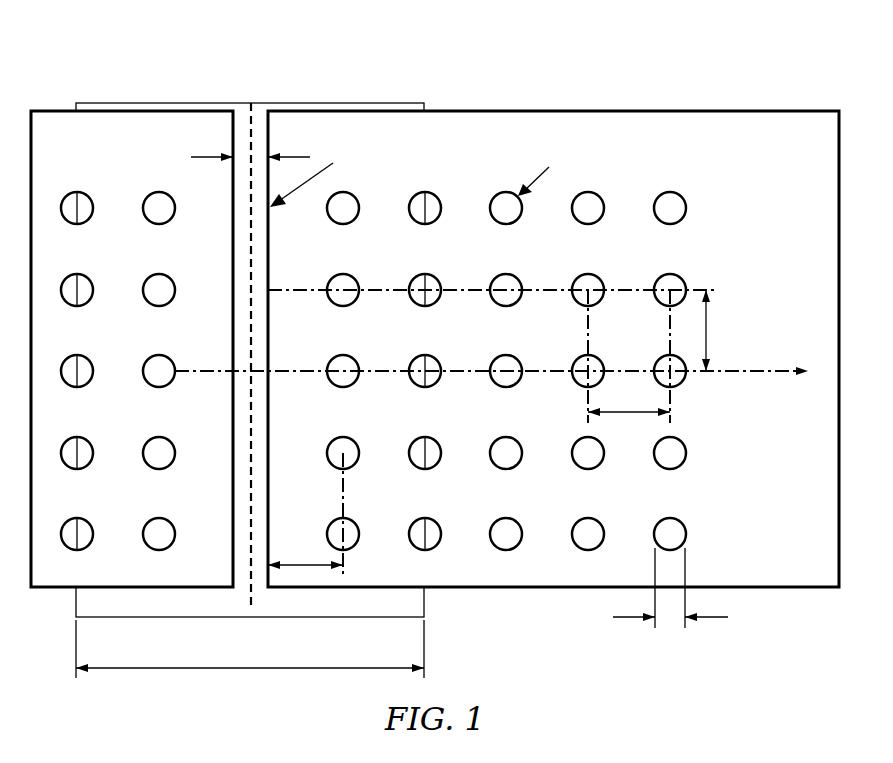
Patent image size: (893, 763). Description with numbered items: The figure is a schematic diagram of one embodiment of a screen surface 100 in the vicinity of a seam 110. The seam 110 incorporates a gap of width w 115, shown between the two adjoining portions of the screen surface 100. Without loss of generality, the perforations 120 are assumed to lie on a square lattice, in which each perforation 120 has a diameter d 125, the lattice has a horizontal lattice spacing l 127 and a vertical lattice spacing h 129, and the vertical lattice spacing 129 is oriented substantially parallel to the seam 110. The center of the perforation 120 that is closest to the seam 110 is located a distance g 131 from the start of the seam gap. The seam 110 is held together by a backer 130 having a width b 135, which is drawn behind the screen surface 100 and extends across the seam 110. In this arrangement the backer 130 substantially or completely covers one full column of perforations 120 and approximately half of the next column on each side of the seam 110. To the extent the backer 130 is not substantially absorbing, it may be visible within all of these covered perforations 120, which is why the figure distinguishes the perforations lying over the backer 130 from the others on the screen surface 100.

The screen surface 100 is at (431, 365).
The seam 110 is at (235, 86).
The gap width w 115 is at (205, 160).
The perforations 120 is at (578, 538).
The diameter d 125 is at (713, 618).
The horizontal lattice spacing l 127 is at (628, 418).
The vertical lattice spacing h 129 is at (707, 318).
The backer 130 is at (90, 598).
The distance g 131 is at (305, 567).
The backer width b 135 is at (213, 669).